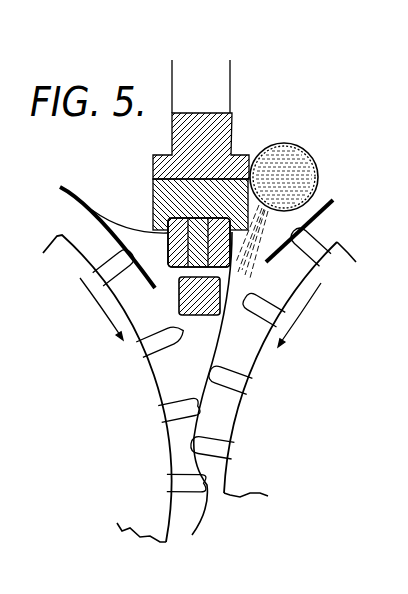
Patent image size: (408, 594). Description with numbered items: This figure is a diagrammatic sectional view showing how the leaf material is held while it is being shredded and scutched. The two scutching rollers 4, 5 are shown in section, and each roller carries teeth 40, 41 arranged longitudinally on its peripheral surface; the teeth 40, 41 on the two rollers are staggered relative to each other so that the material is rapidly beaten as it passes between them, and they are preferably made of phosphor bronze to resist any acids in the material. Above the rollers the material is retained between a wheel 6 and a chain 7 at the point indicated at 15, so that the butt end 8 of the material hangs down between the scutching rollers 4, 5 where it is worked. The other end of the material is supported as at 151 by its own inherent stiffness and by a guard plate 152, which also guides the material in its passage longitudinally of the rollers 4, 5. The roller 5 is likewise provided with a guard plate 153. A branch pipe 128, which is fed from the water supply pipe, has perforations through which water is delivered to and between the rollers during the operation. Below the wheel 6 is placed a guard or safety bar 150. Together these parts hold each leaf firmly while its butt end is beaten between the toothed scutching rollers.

The scutching roller 4 is at (133, 388).
The scutching roller 5 is at (252, 415).
The wheel 6 is at (208, 137).
The chain 7 is at (170, 262).
The butt end of the material 8 is at (221, 348).
The retaining point 15 is at (153, 183).
The teeth 40 is at (183, 410).
The teeth 41 is at (173, 343).
The branch pipe 128 is at (320, 162).
The guard or safety bar 150 is at (188, 313).
The supported end of the material 151 is at (112, 203).
The guard plate 152 is at (138, 280).
The guard plate 153 is at (311, 223).